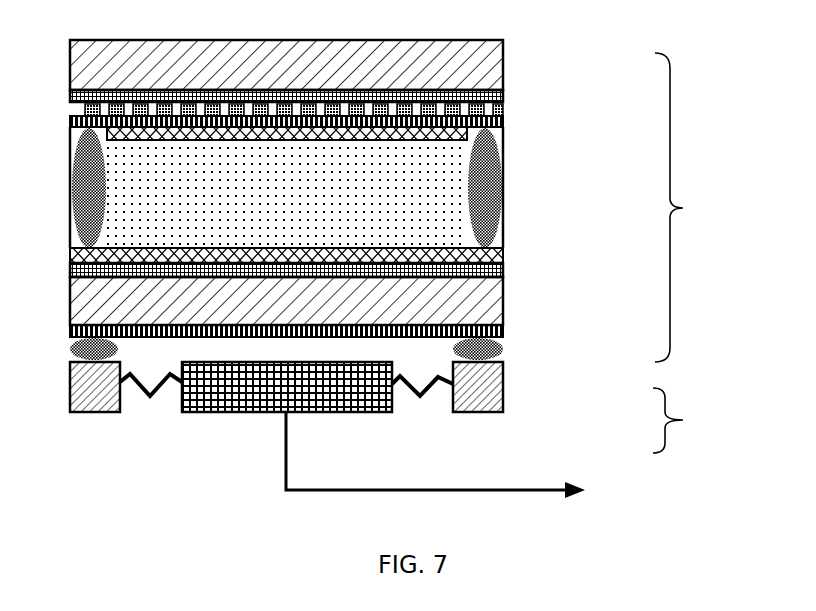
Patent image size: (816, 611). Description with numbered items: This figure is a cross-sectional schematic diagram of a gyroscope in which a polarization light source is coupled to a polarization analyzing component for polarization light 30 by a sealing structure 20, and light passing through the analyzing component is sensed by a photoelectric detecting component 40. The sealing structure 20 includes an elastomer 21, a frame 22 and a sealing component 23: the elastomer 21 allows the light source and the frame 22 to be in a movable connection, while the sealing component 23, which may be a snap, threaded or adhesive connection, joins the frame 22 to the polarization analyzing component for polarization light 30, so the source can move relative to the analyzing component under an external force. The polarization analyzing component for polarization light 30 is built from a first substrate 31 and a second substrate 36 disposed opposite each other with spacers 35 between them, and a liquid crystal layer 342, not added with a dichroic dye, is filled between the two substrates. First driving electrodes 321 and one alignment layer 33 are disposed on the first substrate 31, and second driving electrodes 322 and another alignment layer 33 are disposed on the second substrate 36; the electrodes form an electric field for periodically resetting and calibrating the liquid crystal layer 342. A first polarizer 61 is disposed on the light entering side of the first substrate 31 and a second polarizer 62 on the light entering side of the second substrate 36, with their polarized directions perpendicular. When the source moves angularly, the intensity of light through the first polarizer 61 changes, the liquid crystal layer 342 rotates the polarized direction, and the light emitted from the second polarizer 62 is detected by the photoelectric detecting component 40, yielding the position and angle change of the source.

The sealing structure 20 is at (689, 420).
The elastomer 21 is at (376, 419).
The frame 22 is at (351, 396).
The sealing component 23 is at (351, 369).
The polarization analyzing component for polarization light 30 is at (691, 207).
The first substrate 31 is at (351, 311).
The first driving electrodes 321 is at (358, 284).
The second driving electrodes 322 is at (358, 88).
The alignment layers 33 is at (503, 257).
The liquid crystal layer 342 is at (358, 187).
The spacers 35 is at (483, 188).
The second substrate 36 is at (503, 57).
The photoelectric detecting component 40 is at (359, 64).
The first polarizer 61 is at (351, 350).
The second polarizer 62 is at (503, 120).